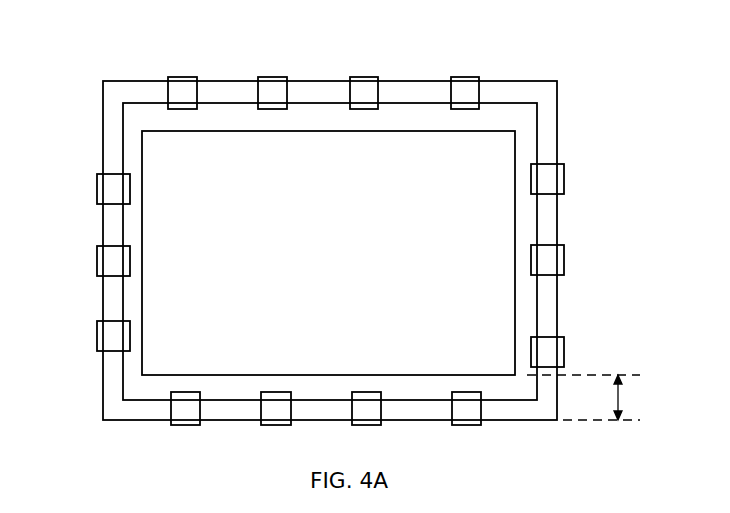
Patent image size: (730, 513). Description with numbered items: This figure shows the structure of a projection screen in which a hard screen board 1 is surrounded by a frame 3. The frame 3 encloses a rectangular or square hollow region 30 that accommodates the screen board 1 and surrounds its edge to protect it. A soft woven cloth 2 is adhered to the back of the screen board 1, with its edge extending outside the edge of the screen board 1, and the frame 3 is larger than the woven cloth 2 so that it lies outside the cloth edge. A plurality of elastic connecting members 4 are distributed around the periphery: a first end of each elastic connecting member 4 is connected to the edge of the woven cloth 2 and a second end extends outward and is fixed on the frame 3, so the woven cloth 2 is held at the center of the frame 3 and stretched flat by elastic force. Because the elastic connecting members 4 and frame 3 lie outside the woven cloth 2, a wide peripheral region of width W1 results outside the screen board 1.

The screen board 1 is at (500, 228).
The woven cloth 2 is at (537, 147).
The frame 3 is at (103, 117).
The hollow region 30 is at (133, 88).
The elastic connecting member 4 is at (355, 76).
The width of the peripheral region W1 is at (592, 397).